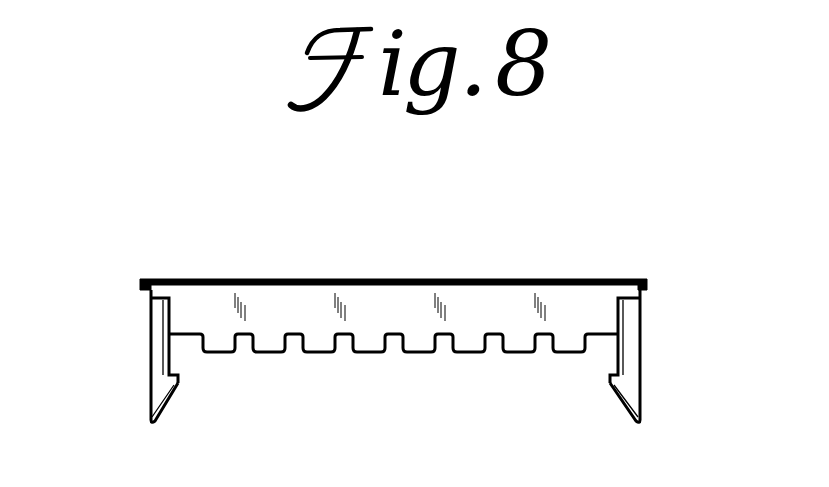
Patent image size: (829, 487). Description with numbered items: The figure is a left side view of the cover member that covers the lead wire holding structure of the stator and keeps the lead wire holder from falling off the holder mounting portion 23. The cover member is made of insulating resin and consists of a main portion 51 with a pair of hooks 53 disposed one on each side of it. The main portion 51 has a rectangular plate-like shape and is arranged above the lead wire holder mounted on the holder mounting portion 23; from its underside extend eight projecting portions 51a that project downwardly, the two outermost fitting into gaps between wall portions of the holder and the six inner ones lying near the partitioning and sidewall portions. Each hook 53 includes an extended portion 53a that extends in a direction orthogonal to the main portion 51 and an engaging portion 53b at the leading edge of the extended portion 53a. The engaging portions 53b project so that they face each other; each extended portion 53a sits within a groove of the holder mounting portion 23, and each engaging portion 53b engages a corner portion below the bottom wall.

The holder mounting portion 23 is at (205, 247).
The main portion 51 is at (502, 308).
The projecting portions 51a is at (218, 346).
The hooks 53 is at (395, 382).
The extended portion 53a is at (150, 325).
The engaging portion 53b is at (170, 387).